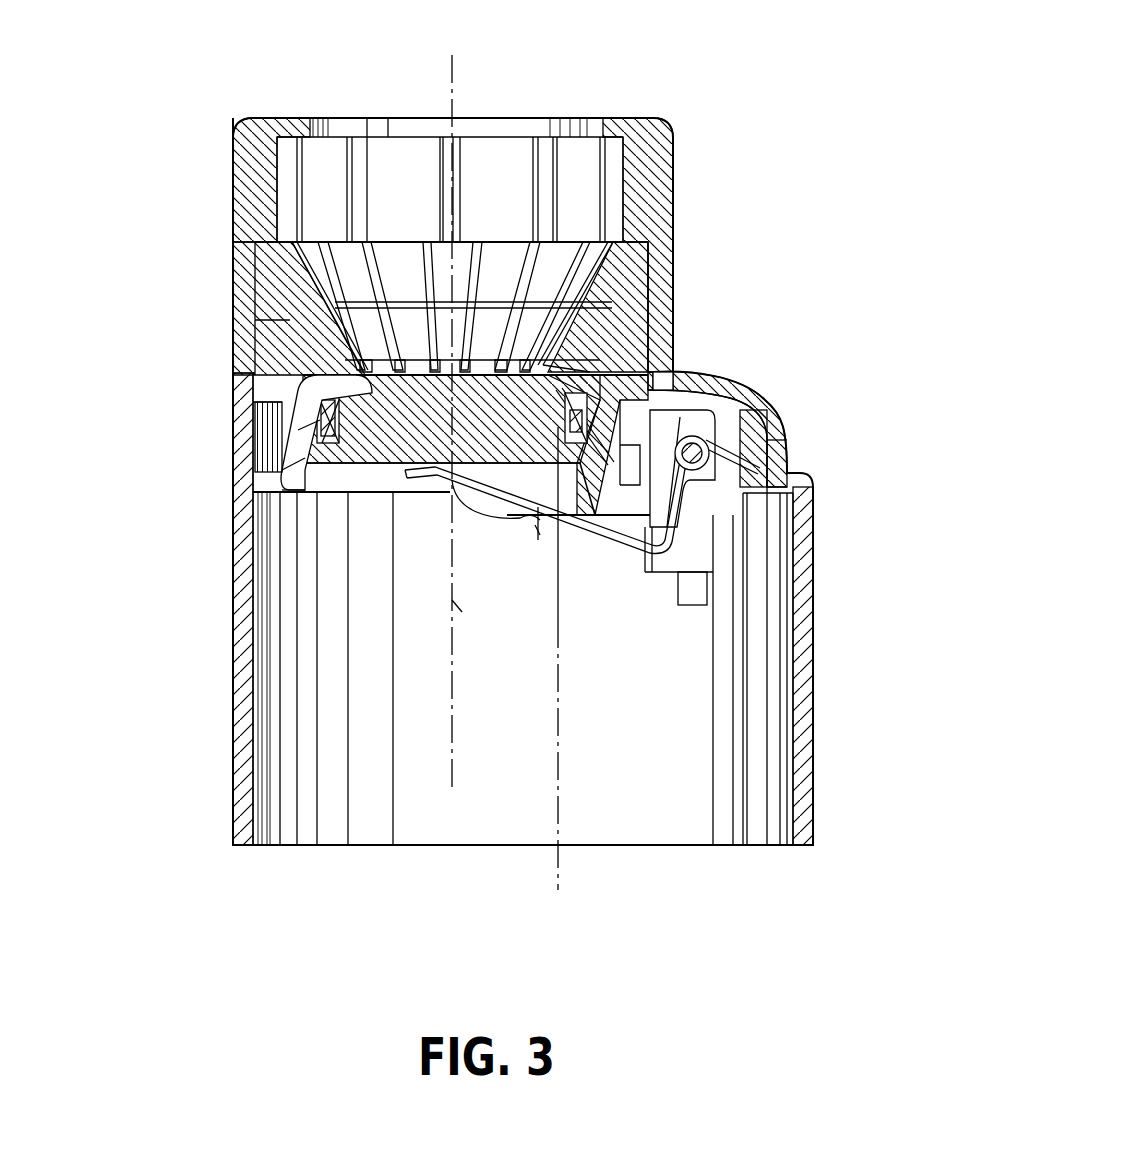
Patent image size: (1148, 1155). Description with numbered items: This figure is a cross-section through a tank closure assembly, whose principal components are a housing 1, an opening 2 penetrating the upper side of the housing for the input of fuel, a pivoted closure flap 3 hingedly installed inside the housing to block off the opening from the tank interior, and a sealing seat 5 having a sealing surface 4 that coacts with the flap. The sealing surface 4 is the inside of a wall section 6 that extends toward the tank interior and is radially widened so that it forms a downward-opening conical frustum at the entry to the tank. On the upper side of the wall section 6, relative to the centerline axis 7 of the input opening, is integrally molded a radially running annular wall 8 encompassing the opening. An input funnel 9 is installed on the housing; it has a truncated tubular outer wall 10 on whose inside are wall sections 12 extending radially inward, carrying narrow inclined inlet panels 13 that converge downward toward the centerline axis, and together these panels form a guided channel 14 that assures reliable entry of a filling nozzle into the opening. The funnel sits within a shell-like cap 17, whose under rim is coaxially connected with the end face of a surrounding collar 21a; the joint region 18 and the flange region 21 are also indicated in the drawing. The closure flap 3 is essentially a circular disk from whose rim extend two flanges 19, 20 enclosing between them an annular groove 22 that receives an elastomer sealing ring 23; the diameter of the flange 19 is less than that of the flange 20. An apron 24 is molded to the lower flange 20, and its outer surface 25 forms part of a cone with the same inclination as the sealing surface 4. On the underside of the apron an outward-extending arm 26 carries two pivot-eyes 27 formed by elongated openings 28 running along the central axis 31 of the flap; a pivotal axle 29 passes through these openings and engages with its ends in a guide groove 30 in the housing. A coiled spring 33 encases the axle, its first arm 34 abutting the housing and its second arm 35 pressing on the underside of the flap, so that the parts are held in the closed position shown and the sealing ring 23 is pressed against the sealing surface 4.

The housing 1 is at (233, 605).
The opening 2 is at (535, 378).
The closure flap 3 is at (560, 382).
The sealing surface 4 is at (312, 470).
The sealing seat 5 is at (325, 520).
The wall section 6 is at (290, 441).
The centerline axis 7 is at (455, 65).
The annular wall 8 is at (555, 368).
The input funnel 9 is at (292, 322).
The outer wall 10 is at (510, 260).
The wall sections 12 is at (255, 256).
The inclined inlet panels 13 is at (420, 272).
The guided channel 14 is at (402, 268).
The shell-like cap 17 is at (235, 135).
The joint 18 is at (250, 378).
The flange 19 is at (338, 366).
The flange 20 is at (320, 455).
The flange 21 is at (640, 364).
The surrounding collar 21a is at (248, 428).
The annular groove 22 is at (300, 456).
The sealing ring 23 is at (563, 416).
The apron 24 is at (520, 518).
The outer surface 25 is at (578, 480).
The arm 26 is at (590, 525).
The pivot-eyes 27 is at (737, 470).
The elongated openings 28 is at (698, 418).
The pivotal axle 29 is at (735, 425).
The guide groove 30 is at (695, 512).
The central axis 31 is at (455, 595).
The coiled spring 33 is at (580, 535).
The first arm 34 is at (702, 453).
The second arm 35 is at (540, 530).